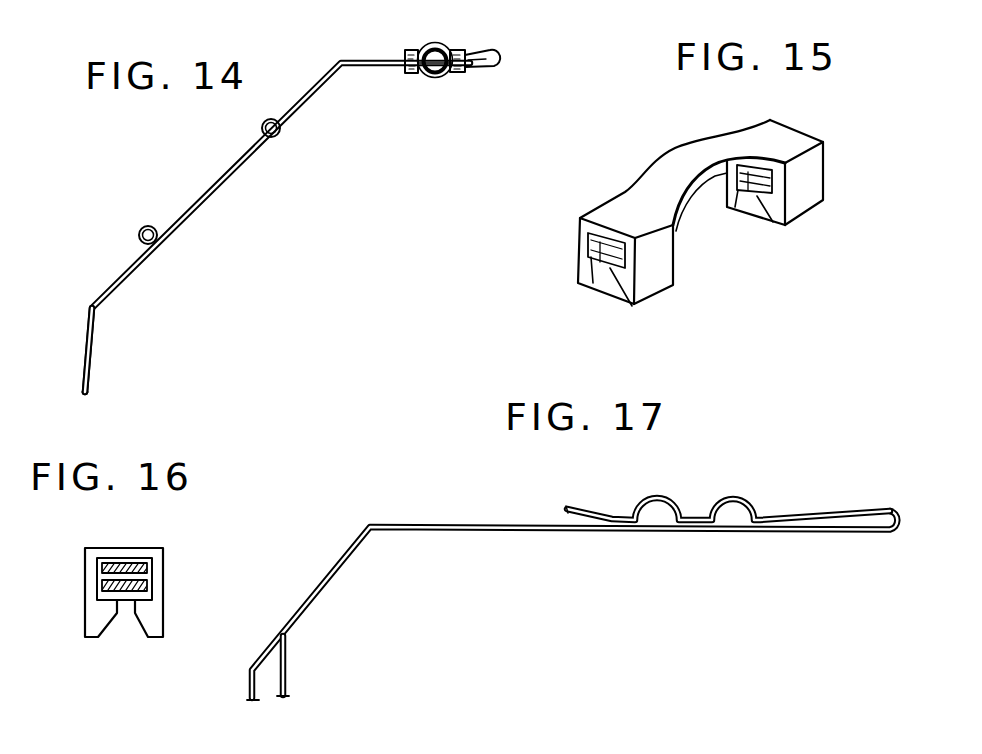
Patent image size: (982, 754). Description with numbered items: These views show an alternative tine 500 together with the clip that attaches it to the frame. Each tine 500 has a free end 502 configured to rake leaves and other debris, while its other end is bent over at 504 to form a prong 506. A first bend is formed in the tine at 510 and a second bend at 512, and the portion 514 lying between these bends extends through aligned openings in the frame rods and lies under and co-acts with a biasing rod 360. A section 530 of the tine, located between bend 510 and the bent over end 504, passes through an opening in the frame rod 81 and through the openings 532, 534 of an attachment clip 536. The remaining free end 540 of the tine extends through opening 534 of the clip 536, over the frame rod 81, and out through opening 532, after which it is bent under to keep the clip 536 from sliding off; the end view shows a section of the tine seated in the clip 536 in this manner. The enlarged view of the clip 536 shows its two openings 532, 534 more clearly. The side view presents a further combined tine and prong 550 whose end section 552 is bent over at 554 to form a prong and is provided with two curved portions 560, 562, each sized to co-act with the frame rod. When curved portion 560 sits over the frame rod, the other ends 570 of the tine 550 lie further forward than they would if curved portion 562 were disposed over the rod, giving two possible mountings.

In FIG. 14, the tine 500 is at (245, 166).
In FIG. 14, the free end 502 is at (93, 362).
In FIG. 14, the bent over end 504 is at (500, 63).
In FIG. 14, the prong 506 is at (487, 76).
In FIG. 17, the prong 506 is at (862, 540).
In FIG. 14, the first bend 510 is at (346, 72).
In FIG. 14, the second bend 512 is at (89, 309).
In FIG. 14, the portion 514 is at (208, 200).
In FIG. 14, the biasing rod 360 is at (138, 236).
In FIG. 14, the frame rod 81 is at (435, 78).
In FIG. 14, the free end 540 is at (403, 53).
In FIG. 16, the free end 540 is at (105, 560).
In FIG. 15, the attachment clip 536 is at (685, 142).
In FIG. 16, the attachment clip 536 is at (133, 548).
In FIG. 15, the opening 532 is at (597, 242).
In FIG. 16, the opening 532 is at (152, 575).
In FIG. 15, the opening 534 is at (737, 200).
In FIG. 16, the section 530 is at (148, 588).
In FIG. 17, the combined tine and prong 550 is at (418, 518).
In FIG. 17, the end section 552 is at (880, 502).
In FIG. 17, the bend 554 is at (899, 534).
In FIG. 17, the curved portion 560 is at (745, 496).
In FIG. 17, the curved portion 562 is at (638, 502).
In FIG. 17, the other ends 570 is at (288, 683).